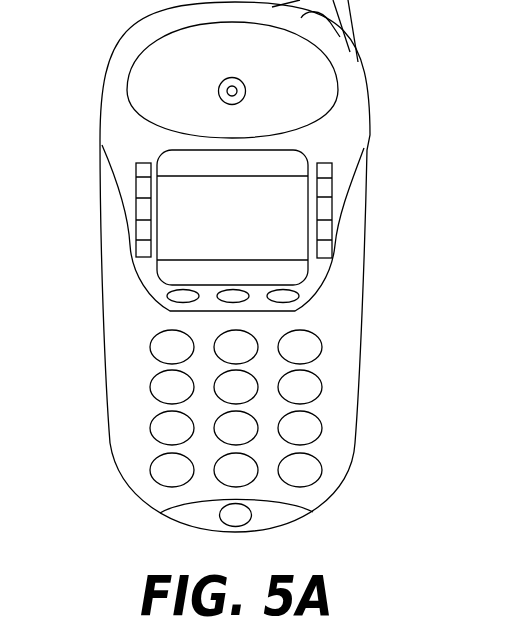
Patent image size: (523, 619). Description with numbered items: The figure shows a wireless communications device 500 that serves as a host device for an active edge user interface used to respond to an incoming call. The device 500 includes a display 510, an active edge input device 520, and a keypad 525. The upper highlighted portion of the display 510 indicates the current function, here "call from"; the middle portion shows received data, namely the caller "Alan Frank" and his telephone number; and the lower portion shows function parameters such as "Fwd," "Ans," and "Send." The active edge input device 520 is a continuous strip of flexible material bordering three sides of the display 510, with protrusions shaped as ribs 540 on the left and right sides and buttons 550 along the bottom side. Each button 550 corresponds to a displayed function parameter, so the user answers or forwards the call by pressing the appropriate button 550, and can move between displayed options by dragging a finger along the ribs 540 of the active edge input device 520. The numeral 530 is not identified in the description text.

The wireless communications device 500 is at (355, 65).
The display 510 is at (288, 202).
The active edge input device 520 is at (318, 275).
The soft key labels 530 is at (165, 275).
The ribs 540 is at (143, 171).
The buttons 550 is at (170, 311).
The keypad 525 is at (370, 322).